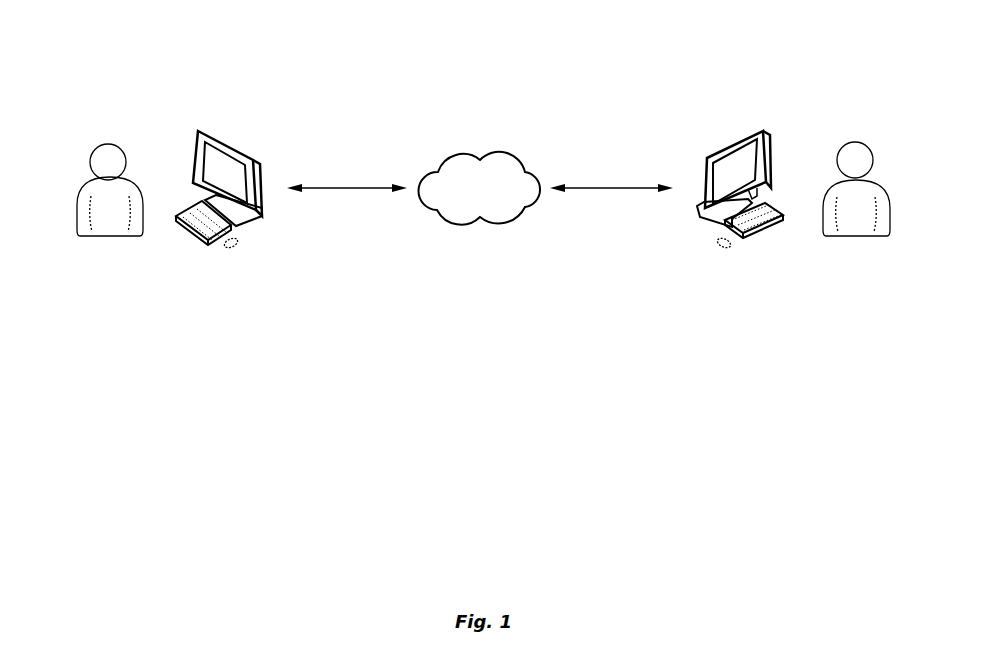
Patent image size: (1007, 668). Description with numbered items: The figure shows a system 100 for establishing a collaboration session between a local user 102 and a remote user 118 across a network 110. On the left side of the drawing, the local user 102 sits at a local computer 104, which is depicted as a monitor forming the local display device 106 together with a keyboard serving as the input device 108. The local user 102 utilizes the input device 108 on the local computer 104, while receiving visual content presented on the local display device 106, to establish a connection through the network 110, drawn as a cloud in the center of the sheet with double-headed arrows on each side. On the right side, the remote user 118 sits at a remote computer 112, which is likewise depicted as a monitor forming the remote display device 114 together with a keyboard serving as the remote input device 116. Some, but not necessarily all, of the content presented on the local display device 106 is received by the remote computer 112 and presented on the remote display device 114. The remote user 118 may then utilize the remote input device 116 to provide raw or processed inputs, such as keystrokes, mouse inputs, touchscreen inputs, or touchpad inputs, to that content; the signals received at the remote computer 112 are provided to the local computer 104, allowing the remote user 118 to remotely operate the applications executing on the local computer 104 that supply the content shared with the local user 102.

The system 100 is at (897, 57).
The local user 102 is at (83, 180).
The local computer 104 is at (238, 128).
The local display device 106 is at (197, 131).
The input device 108 is at (183, 228).
The network 110 is at (447, 160).
The remote computer 112 is at (723, 105).
The remote display device 114 is at (713, 150).
The remote input device 116 is at (770, 230).
The remote user 118 is at (845, 145).